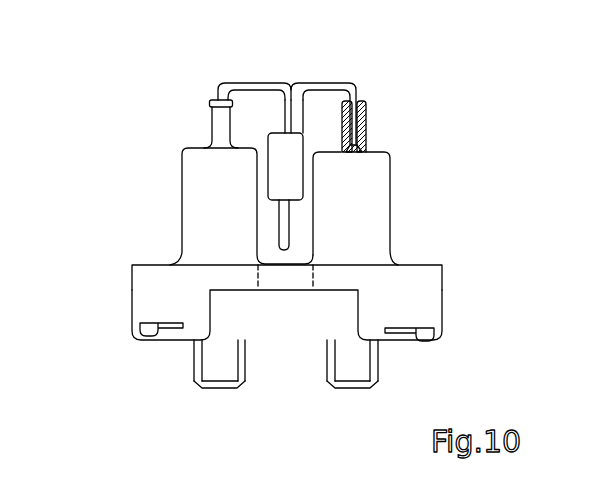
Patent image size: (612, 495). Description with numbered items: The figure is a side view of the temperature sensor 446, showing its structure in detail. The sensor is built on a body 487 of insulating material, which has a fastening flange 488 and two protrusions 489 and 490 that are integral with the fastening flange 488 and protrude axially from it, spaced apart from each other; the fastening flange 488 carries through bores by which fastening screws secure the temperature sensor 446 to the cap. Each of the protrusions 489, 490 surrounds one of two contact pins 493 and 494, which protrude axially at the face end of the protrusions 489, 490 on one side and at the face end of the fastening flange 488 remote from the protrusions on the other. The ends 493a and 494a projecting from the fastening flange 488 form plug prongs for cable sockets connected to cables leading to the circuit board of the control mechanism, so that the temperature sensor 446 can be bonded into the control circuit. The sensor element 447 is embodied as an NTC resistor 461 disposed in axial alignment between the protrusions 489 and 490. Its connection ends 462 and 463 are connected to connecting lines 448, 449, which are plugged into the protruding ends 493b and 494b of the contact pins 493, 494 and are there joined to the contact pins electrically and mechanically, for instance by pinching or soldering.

The temperature sensor 446 is at (199, 90).
The sensor element 447 is at (304, 121).
The connecting line 448 is at (351, 83).
The connecting line 449 is at (247, 82).
The NTC resistor 461 is at (360, 148).
The connection end 462 is at (283, 235).
The connection end 463 is at (283, 129).
The body 487 is at (152, 263).
The fastening flange 488 is at (442, 300).
The protrusion 489 is at (188, 178).
The protrusion 490 is at (378, 188).
The contact pin 493 is at (181, 356).
The protruding end 493a is at (214, 366).
The protruding end 493b is at (212, 122).
The contact pin 494 is at (391, 362).
The protruding end 494a is at (358, 365).
The protruding end 494b is at (365, 110).